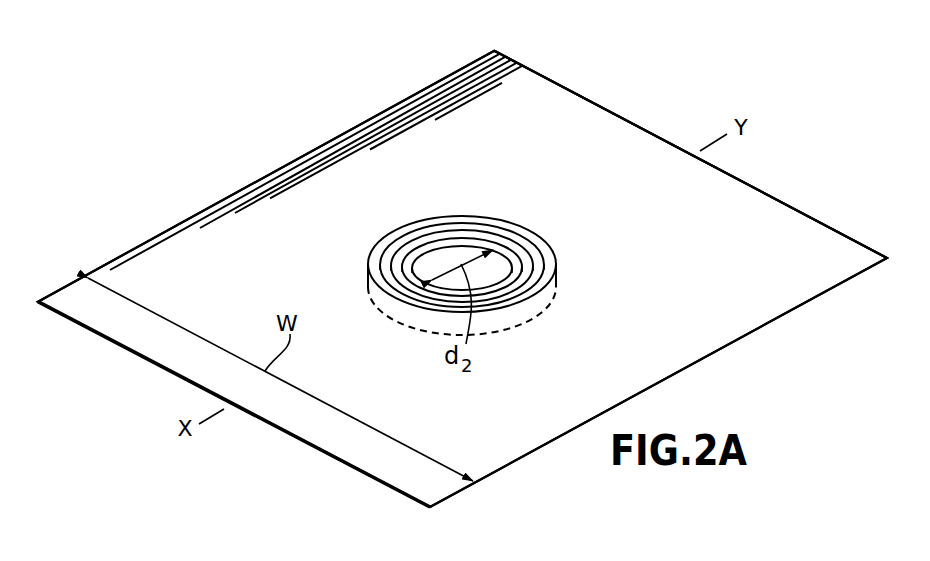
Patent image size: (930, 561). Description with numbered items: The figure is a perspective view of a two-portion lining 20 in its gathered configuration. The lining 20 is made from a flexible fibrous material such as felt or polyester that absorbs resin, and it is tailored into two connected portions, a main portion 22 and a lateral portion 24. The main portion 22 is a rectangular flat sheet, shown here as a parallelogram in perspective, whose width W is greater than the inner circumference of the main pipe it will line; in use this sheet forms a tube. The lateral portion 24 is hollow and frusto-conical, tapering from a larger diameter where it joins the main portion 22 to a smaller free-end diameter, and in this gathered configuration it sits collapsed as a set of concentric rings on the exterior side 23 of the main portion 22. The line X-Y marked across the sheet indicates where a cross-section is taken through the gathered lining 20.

The lining 20 is at (572, 110).
The main portion 22 is at (690, 317).
The exterior side 23 is at (814, 246).
The lateral portion 24 is at (546, 221).